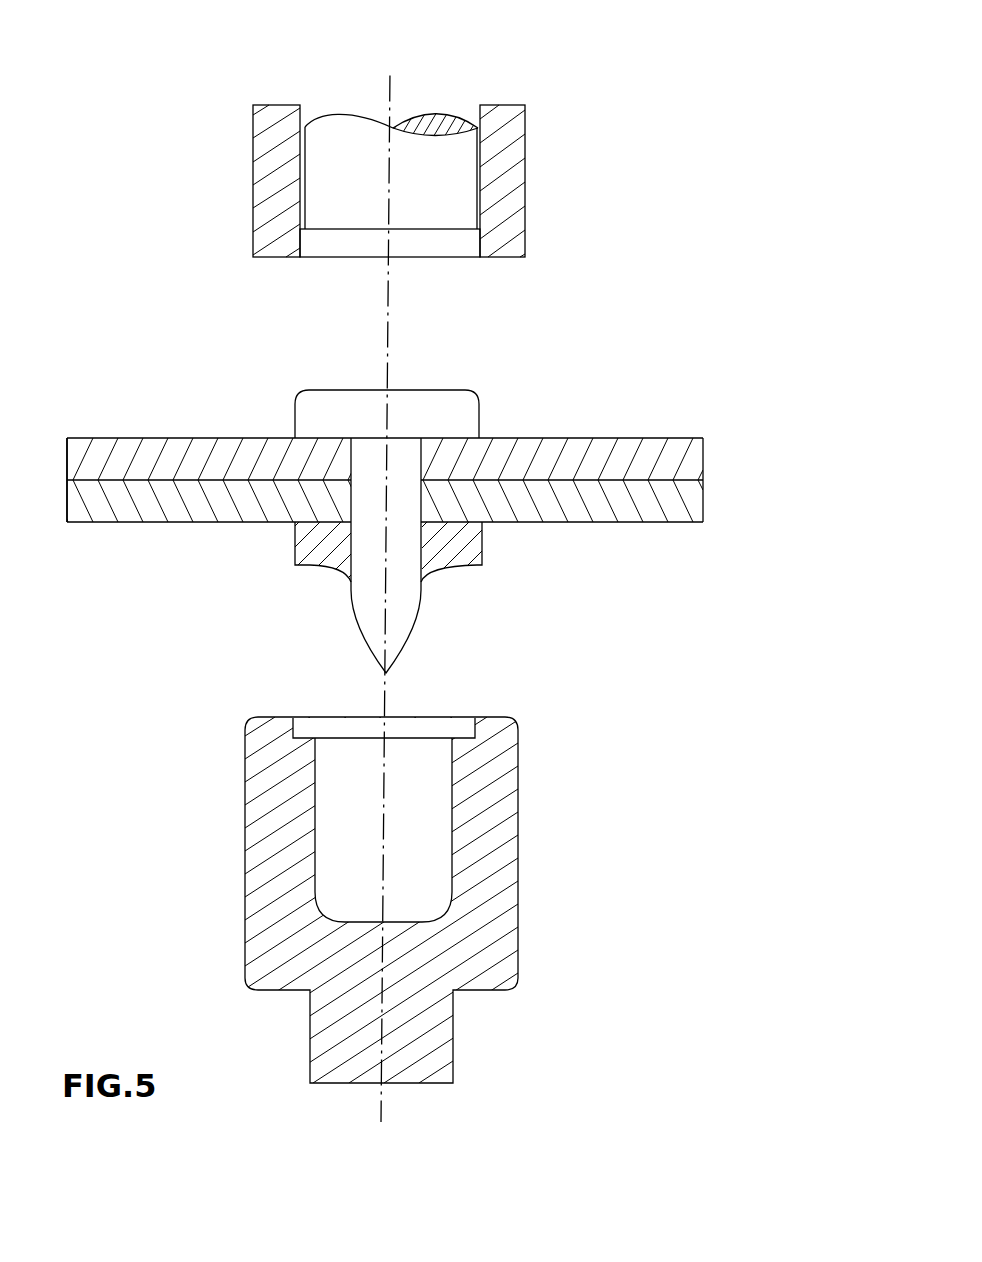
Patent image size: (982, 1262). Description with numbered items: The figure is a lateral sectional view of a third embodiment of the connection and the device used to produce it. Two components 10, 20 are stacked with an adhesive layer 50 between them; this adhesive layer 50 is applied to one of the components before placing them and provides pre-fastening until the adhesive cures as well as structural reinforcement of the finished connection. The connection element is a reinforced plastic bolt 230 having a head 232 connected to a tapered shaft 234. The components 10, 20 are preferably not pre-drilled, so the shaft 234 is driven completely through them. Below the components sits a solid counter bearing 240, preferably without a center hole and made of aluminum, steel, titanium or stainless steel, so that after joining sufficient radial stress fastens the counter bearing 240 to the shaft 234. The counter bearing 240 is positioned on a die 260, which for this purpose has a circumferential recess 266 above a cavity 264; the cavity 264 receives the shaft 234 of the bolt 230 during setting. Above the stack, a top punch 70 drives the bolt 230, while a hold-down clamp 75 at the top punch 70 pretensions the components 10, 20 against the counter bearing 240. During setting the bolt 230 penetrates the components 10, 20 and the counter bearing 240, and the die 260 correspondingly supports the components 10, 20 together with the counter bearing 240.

The component 10 is at (688, 460).
The component 20 is at (688, 505).
The adhesive layer 50 is at (120, 478).
The top punch 70 is at (410, 165).
The hold-down clamp 75 is at (540, 155).
The reinforced plastic bolt 230 is at (435, 473).
The head 232 is at (447, 408).
The tapered shaft 234 is at (395, 588).
The counter bearing 240 is at (460, 548).
The die 260 is at (432, 898).
The cavity 264 is at (427, 862).
The recess 266 is at (478, 728).